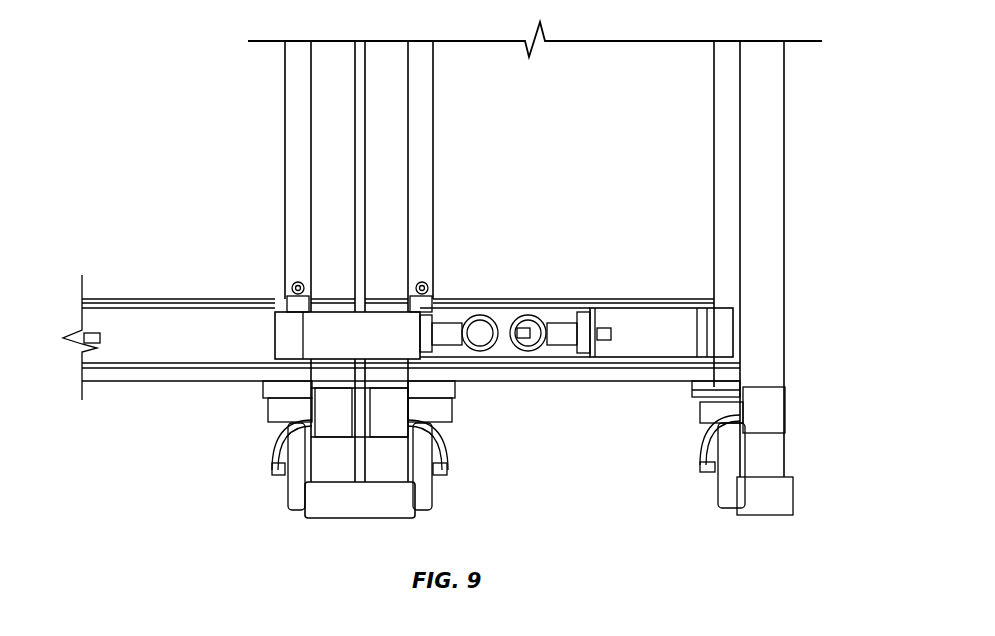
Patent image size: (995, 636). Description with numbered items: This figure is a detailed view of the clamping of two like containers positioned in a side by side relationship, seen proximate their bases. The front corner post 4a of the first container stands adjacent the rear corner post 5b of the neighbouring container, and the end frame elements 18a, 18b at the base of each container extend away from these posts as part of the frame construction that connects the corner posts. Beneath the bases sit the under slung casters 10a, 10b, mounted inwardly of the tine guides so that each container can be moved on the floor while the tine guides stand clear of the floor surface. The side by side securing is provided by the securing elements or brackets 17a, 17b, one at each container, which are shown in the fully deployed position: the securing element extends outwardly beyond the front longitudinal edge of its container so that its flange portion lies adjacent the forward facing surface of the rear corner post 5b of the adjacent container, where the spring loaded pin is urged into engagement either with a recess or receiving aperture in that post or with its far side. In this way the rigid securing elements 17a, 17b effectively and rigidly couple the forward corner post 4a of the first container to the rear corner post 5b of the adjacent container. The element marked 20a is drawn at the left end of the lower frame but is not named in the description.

The front corner post 4a is at (335, 188).
The rear corner post 5b is at (388, 187).
The securing element 17a is at (380, 345).
The securing element 17b is at (640, 322).
The end frame element 18a is at (208, 299).
The end frame element 18b is at (532, 299).
The stop member 20a is at (95, 333).
The caster 10a is at (290, 495).
The caster 10b is at (432, 495).